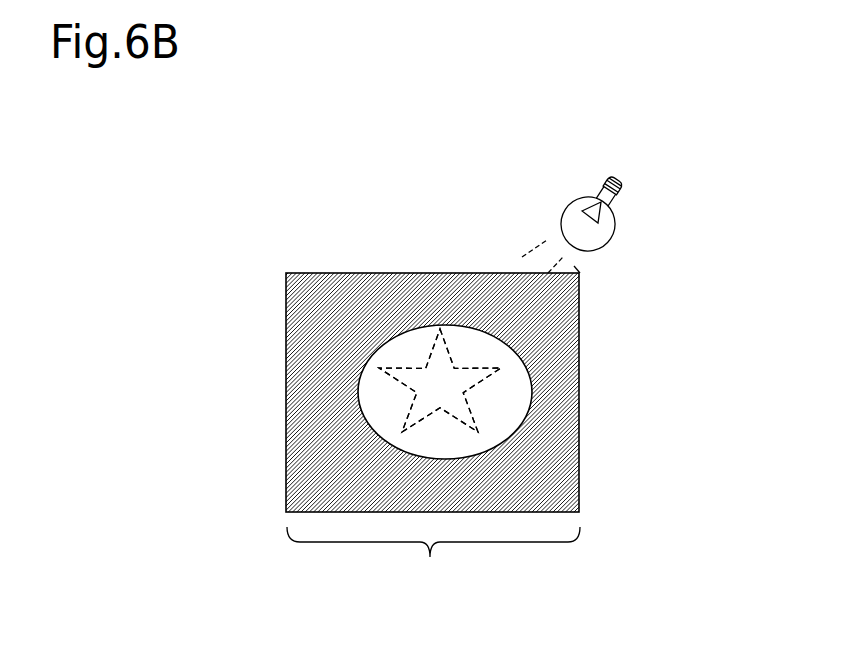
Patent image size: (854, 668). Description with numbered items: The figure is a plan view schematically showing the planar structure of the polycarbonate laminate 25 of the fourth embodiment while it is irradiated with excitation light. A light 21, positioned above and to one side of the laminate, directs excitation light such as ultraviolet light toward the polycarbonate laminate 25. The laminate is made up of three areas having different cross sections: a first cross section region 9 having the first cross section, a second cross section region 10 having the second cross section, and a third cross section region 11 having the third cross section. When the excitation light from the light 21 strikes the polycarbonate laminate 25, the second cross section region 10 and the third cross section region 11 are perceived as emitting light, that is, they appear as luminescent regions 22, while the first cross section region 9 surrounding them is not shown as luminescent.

The first cross section region 9 is at (285, 494).
The second cross section region 10 is at (395, 342).
The third cross section region 11 is at (398, 385).
The luminescent regions 22 is at (472, 350).
The light 21 is at (557, 185).
The polycarbonate laminate 25 is at (433, 558).